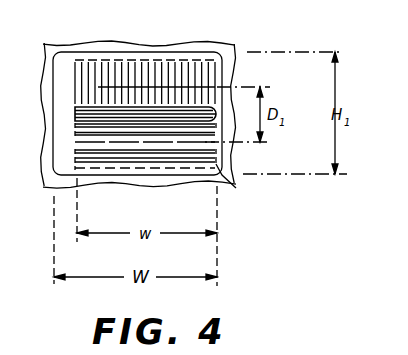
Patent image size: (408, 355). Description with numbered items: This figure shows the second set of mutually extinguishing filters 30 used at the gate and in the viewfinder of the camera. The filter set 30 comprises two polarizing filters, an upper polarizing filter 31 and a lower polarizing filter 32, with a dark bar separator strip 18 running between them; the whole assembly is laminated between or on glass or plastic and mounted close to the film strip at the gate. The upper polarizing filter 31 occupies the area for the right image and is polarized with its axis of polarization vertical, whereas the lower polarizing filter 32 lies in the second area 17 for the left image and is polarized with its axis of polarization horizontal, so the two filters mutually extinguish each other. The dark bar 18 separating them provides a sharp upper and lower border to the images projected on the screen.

The second area 17 is at (240, 190).
The dark bar separator strip 18 is at (75, 113).
The second set of mutually extinguishing filters 30 is at (188, 54).
The upper polarizing filter 31 is at (160, 61).
The lower polarizing filter 32 is at (120, 170).